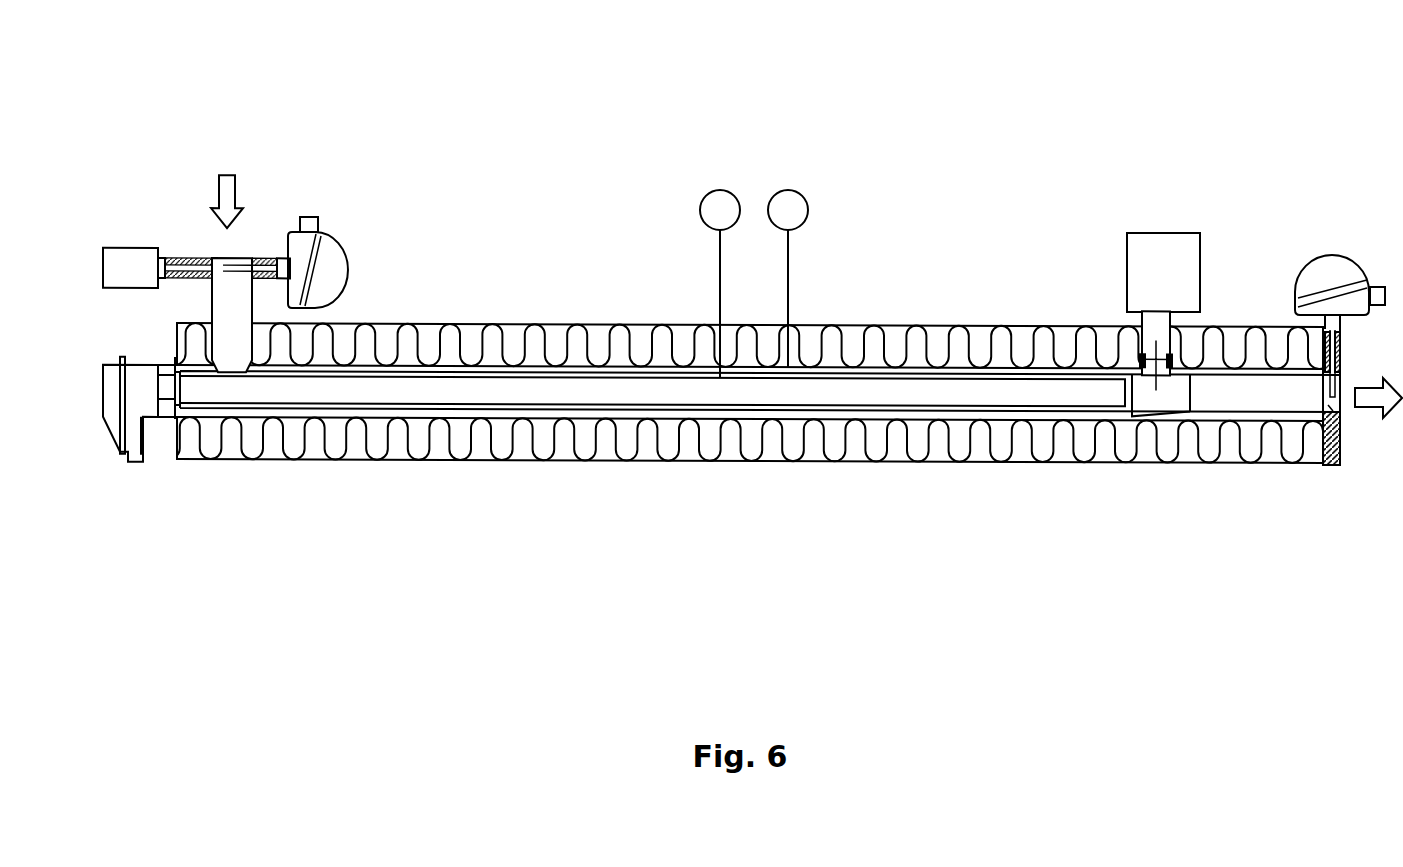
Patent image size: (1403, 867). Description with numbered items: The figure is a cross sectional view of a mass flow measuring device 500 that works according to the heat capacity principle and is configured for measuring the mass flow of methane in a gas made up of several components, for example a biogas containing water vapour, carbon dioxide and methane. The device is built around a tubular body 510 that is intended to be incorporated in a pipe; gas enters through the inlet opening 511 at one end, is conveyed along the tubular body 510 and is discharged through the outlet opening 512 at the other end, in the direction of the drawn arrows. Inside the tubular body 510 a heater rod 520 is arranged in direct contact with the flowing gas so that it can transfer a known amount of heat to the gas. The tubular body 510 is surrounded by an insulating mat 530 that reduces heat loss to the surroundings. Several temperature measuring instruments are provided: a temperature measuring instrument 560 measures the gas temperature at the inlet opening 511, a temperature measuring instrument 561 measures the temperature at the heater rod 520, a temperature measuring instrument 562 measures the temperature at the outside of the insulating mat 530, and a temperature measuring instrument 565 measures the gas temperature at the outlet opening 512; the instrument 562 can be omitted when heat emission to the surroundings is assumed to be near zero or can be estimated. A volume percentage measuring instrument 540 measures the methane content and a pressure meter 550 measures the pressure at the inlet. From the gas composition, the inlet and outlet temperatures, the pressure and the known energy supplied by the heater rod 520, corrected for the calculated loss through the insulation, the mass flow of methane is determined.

The mass flow measuring device 500 is at (479, 165).
The tubular body 510 is at (978, 407).
The inlet opening 511 is at (218, 265).
The outlet opening 512 is at (1340, 428).
The heater rod 520 is at (245, 403).
The insulating mat 530 is at (467, 447).
The volume percentage measuring instrument 540 is at (1125, 255).
The pressure meter 550 is at (113, 248).
The temperature measuring instrument 560 is at (330, 260).
The temperature measuring instrument 561 is at (719, 187).
The temperature measuring instrument 562 is at (789, 187).
The temperature measuring instrument 565 is at (1345, 270).